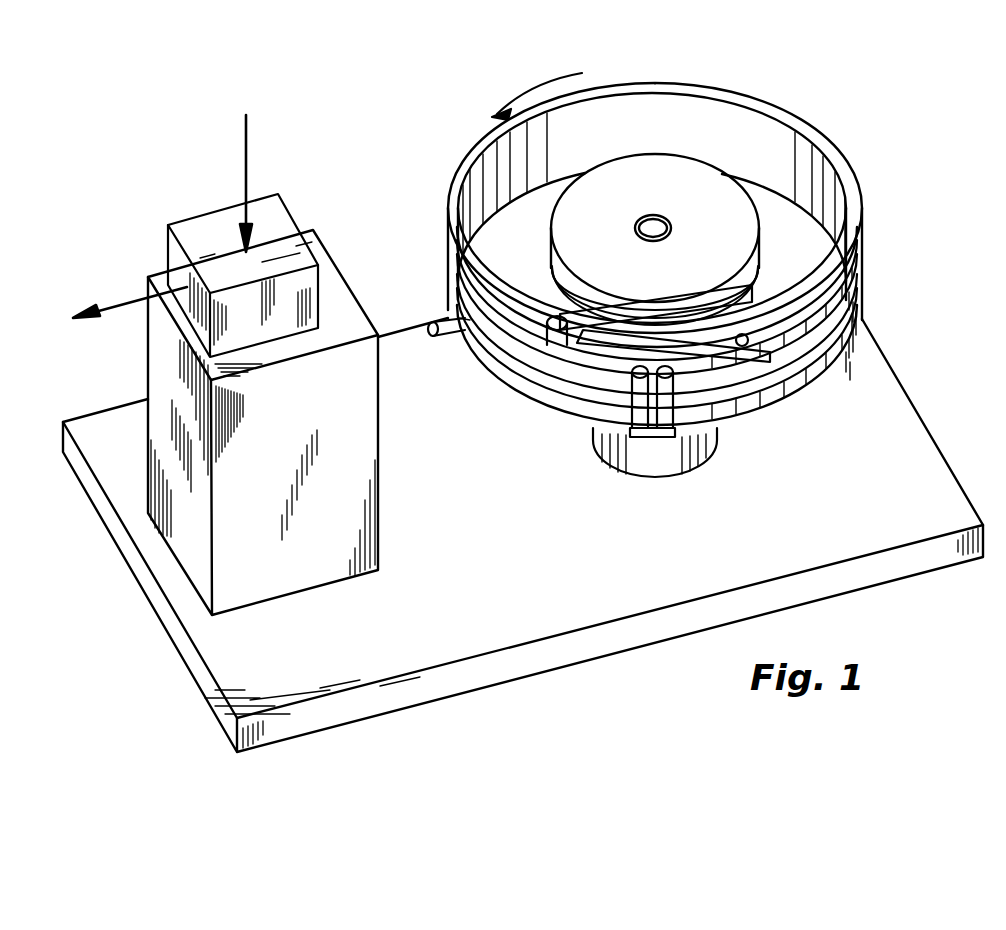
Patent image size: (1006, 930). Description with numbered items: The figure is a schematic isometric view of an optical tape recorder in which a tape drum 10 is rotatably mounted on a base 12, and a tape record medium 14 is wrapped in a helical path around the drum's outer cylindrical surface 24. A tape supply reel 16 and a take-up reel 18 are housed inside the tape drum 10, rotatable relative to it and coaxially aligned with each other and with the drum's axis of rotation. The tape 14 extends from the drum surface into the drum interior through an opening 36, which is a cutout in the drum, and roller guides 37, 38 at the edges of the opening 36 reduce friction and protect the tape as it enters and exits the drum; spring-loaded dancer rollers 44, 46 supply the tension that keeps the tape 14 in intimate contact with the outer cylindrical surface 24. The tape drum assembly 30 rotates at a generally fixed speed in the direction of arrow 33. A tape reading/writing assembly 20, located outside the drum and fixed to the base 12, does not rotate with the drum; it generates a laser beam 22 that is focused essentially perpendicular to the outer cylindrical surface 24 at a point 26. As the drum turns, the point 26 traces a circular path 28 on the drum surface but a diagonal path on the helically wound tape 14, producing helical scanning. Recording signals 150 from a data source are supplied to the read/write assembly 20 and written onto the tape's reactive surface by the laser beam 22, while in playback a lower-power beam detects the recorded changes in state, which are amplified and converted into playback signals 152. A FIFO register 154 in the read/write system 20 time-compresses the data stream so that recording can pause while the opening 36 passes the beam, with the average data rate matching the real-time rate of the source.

The tape drum 10 is at (728, 93).
The base 12 is at (917, 443).
The tape record medium 14 is at (585, 387).
The tape supply reel 16 is at (745, 300).
The take-up reel 18 is at (732, 222).
The tape reading/writing assembly 20 is at (271, 448).
The laser beam 22 is at (416, 330).
The outer cylindrical surface 24 is at (490, 380).
The point 26 is at (467, 327).
The circular path 28 is at (530, 377).
The tape drum assembly 30 is at (785, 108).
The arrow 33 is at (534, 88).
The opening 36 is at (652, 438).
The roller guide 37 is at (640, 420).
The roller guide 38 is at (668, 385).
The dancer roller 44 is at (552, 320).
The dancer roller 46 is at (744, 334).
The recording signals 150 is at (247, 160).
The playback signals 152 is at (133, 296).
The FIFO register 154 is at (248, 341).